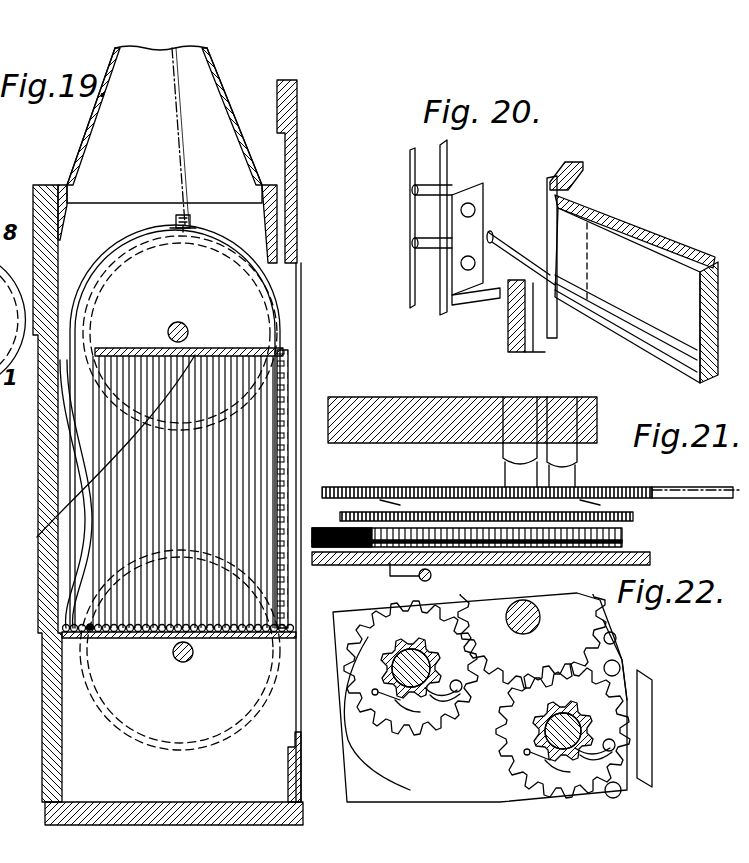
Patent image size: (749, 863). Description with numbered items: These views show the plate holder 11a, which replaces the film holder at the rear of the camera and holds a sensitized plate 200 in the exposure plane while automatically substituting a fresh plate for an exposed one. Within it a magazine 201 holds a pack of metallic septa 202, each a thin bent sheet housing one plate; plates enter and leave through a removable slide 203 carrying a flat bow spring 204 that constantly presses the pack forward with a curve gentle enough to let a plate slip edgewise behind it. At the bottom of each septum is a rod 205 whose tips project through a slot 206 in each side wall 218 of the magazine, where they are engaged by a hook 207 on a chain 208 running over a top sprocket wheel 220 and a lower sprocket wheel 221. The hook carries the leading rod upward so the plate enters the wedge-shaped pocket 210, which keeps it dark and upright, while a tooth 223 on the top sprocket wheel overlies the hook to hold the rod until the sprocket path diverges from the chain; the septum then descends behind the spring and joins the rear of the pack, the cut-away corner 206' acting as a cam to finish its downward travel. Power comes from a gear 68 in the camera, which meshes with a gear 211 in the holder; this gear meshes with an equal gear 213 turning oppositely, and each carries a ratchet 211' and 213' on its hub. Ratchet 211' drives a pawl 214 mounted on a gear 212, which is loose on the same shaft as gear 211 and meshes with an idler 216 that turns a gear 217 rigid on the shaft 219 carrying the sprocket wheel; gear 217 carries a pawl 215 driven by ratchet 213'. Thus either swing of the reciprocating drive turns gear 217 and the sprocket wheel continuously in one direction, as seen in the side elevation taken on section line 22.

In FIG. 19, the plate holder 11a is at (42, 676).
In FIG. 21, the plate holder 11a is at (385, 398).
In FIG. 21, the section line 22 is at (313, 510).
In FIG. 21, the gear in the camera 68 is at (720, 496).
In FIG. 19, the sensitized plate 200 is at (193, 170).
In FIG. 20, the sensitized plate 200 is at (640, 222).
In FIG. 19, the magazine 201 is at (157, 623).
In FIG. 20, the metallic septum 202 is at (652, 293).
In FIG. 19, the removable slide 203 is at (45, 493).
In FIG. 19, the flat bow spring 204 is at (53, 440).
In FIG. 19, the rod 205 is at (250, 638).
In FIG. 20, the rod 205 is at (513, 240).
In FIG. 19, the slot 206 is at (216, 426).
In FIG. 20, the slot 206 is at (487, 316).
In FIG. 21, the slot 206 is at (511, 566).
In FIG. 22, the slot 206 is at (665, 681).
In FIG. 19, the cut-away corner 206' is at (180, 650).
In FIG. 19, the hook 207 is at (190, 226).
In FIG. 20, the hook 207 is at (498, 235).
In FIG. 20, the chain 208 is at (415, 222).
In FIG. 22, the chain 208 is at (622, 690).
In FIG. 19, the pocket 210 is at (164, 124).
In FIG. 21, the gear 211 is at (513, 479).
In FIG. 22, the ratchet 211' is at (622, 735).
In FIG. 21, the gear 212 is at (634, 519).
In FIG. 22, the gear 212 is at (523, 733).
In FIG. 21, the gear 213 is at (531, 476).
In FIG. 22, the ratchet 213' is at (430, 716).
In FIG. 22, the pawl 214 is at (623, 777).
In FIG. 22, the pawl 215 is at (430, 717).
In FIG. 22, the idler 216 is at (532, 614).
In FIG. 21, the gear 217 is at (325, 565).
In FIG. 22, the gear 217 is at (375, 765).
In FIG. 19, the side wall 218 is at (112, 793).
In FIG. 20, the side wall 218 is at (587, 307).
In FIG. 21, the side wall 218 is at (530, 566).
In FIG. 22, the side wall 218 is at (646, 745).
In FIG. 19, the shaft 219 is at (175, 332).
In FIG. 21, the shaft 219 is at (432, 577).
In FIG. 22, the shaft 219 is at (411, 668).
In FIG. 19, the top sprocket wheel 220 is at (104, 274).
In FIG. 19, the lower sprocket wheel 221 is at (178, 660).
In FIG. 19, the tooth 223 is at (176, 222).